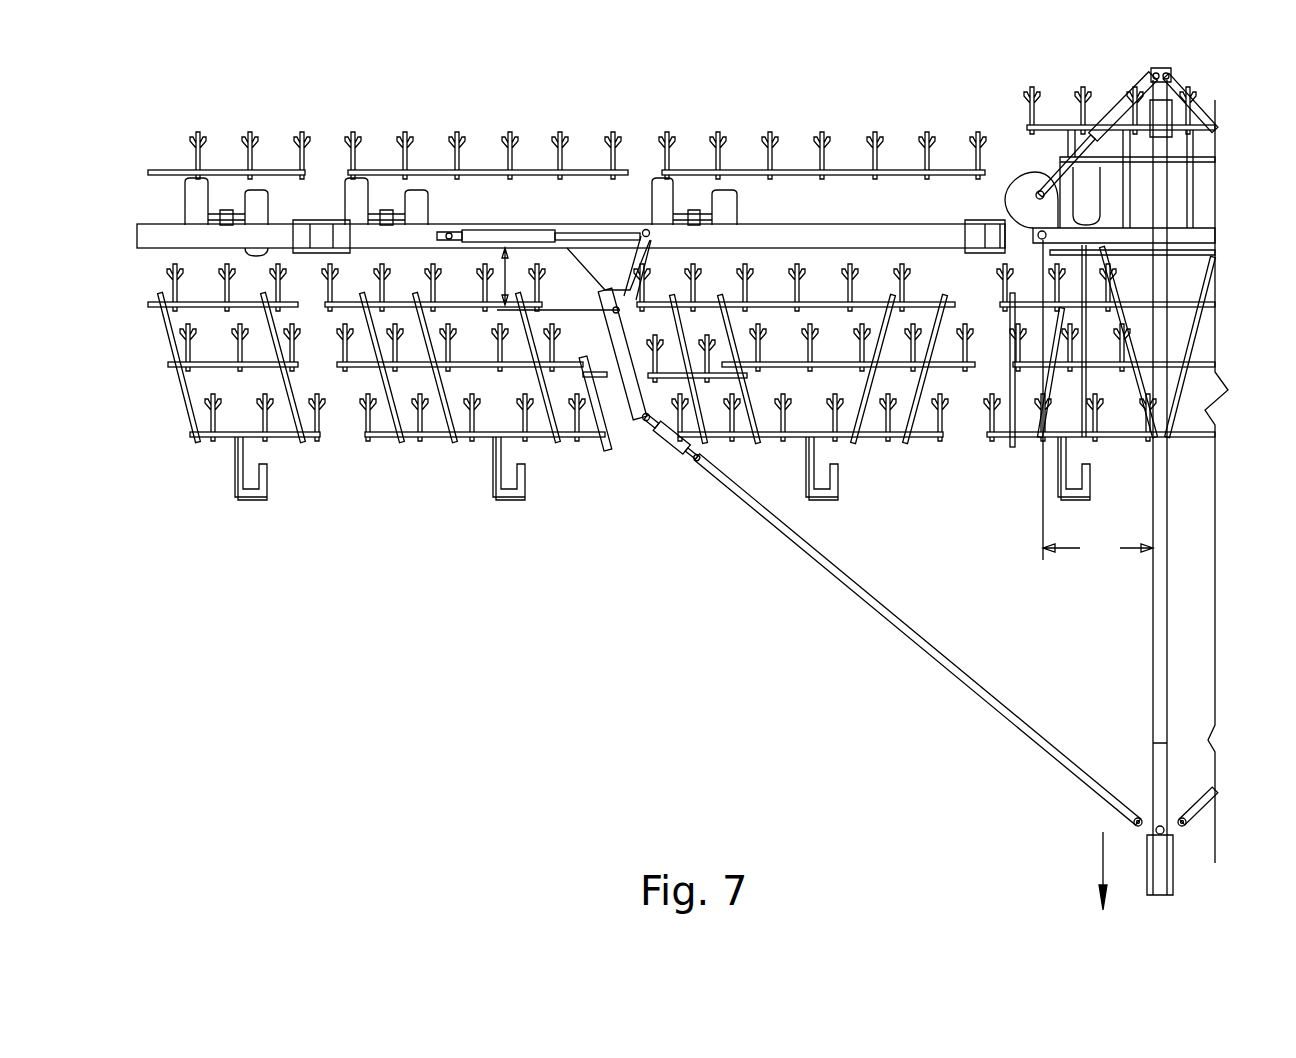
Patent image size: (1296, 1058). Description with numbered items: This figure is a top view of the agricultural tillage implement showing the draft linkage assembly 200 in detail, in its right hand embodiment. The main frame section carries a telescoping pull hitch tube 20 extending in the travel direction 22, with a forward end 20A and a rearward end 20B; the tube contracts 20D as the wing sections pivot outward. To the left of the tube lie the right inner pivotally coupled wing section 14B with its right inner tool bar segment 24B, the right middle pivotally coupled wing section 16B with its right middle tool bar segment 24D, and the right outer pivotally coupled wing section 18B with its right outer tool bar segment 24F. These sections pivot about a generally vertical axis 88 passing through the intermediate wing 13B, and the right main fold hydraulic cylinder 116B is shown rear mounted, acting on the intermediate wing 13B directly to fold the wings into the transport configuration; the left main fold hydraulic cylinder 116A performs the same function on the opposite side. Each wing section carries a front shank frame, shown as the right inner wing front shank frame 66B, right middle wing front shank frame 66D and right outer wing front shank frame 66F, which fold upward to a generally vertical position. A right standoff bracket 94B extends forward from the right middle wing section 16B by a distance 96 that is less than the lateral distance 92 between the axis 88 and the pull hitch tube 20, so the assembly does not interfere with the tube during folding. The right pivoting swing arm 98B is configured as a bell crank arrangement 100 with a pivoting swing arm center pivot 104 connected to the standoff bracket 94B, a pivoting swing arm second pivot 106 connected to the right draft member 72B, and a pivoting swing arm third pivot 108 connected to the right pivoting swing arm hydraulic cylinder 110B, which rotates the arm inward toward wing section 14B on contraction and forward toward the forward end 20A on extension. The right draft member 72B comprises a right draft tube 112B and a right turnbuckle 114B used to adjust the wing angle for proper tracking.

The right outer pivotally coupled wing section 18B is at (165, 232).
The right outer tool bar segment 24F is at (162, 243).
The right middle tool bar segment 24D is at (369, 235).
The right middle pivotally coupled wing section 16B is at (547, 226).
The right pivoting swing arm hydraulic cylinder 110B is at (505, 235).
The pivoting swing arm third pivot 108 is at (645, 230).
The right pivoting swing arm 98B is at (643, 317).
The right inner pivotally coupled wing section 14B is at (862, 230).
The right inner tool bar segment 24B is at (898, 235).
The intermediate wing 13B is at (1023, 207).
The generally vertical axis 88 is at (1038, 232).
The right main fold hydraulic cylinder 116B is at (1117, 115).
The left main fold hydraulic cylinder 116A is at (1202, 105).
The distance standoff bracket extends forward 96 is at (505, 282).
The right standoff bracket 94B is at (602, 277).
The bell crank arrangement 100 is at (597, 322).
The pivoting swing arm center pivot 104 is at (600, 447).
The pivoting swing arm second pivot 106 is at (646, 430).
The right turnbuckle 114B is at (670, 430).
The right outer wing front shank frame 66F is at (222, 440).
The right middle wing front shank frame 66D is at (435, 440).
The right inner wing front shank frame 66B is at (877, 440).
The rearward end of pull hitch tube 20B is at (1147, 325).
The lateral distance 92 is at (1098, 400).
The pull hitch tube 20 is at (1155, 612).
The draft linkage assembly 200 is at (892, 619).
The right draft member 72B is at (985, 715).
The right draft tube 112B is at (1045, 760).
The contraction of telescoping pull hitch tube 20D is at (1152, 758).
The forward end of pull hitch tube 20A is at (1165, 790).
The travel direction 22 is at (1100, 860).